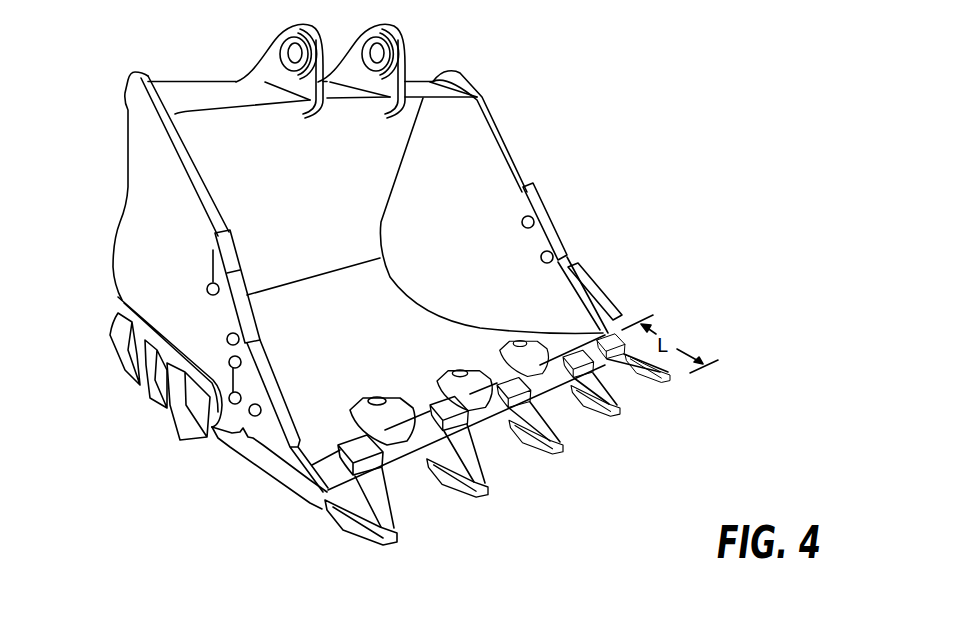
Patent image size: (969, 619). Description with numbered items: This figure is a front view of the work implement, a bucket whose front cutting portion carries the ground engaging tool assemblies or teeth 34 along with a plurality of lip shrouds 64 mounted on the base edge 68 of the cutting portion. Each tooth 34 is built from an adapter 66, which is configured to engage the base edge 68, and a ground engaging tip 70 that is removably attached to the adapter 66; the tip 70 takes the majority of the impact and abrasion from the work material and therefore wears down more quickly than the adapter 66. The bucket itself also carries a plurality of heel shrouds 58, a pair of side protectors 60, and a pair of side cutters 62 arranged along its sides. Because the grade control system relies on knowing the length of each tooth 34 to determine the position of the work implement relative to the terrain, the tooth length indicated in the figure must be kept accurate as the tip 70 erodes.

The tooth 34 is at (327, 503).
The heel shroud 58 is at (130, 372).
The side protector 60 is at (227, 256).
The side cutter 62 is at (253, 395).
The lip shroud 64 is at (363, 453).
The adapter 66 is at (540, 357).
The base edge 68 is at (480, 397).
The ground engaging tip 70 is at (367, 530).